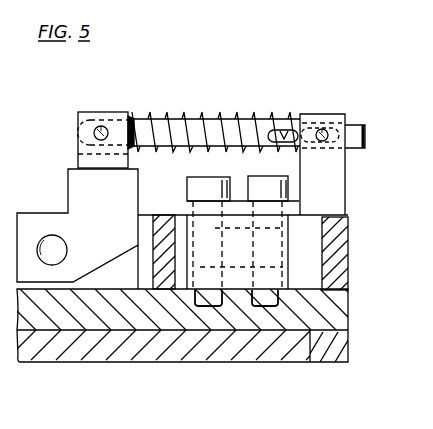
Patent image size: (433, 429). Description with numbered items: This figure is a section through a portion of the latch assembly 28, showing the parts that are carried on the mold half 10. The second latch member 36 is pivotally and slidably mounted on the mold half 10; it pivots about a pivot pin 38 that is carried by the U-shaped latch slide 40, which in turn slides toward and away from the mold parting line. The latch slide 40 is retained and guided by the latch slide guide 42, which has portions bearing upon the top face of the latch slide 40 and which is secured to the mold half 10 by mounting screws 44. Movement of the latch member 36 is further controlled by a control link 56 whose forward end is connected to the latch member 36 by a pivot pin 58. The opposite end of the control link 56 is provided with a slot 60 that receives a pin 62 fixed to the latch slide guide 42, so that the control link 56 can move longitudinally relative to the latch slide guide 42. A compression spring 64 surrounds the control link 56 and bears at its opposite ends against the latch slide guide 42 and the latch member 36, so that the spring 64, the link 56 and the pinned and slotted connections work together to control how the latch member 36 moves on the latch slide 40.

The mold half 10 is at (358, 325).
The latch assembly 28 is at (238, 63).
The second latch member 36 is at (45, 213).
The pivot pin 38 is at (57, 246).
The latch slide 40 is at (343, 246).
The latch slide guide 42 is at (342, 180).
The mounting screws 44 is at (196, 183).
The control link 56 is at (244, 126).
The pivot pin 58 is at (100, 126).
The slot 60 is at (285, 132).
The pin 62 is at (324, 129).
The compression spring 64 is at (166, 114).